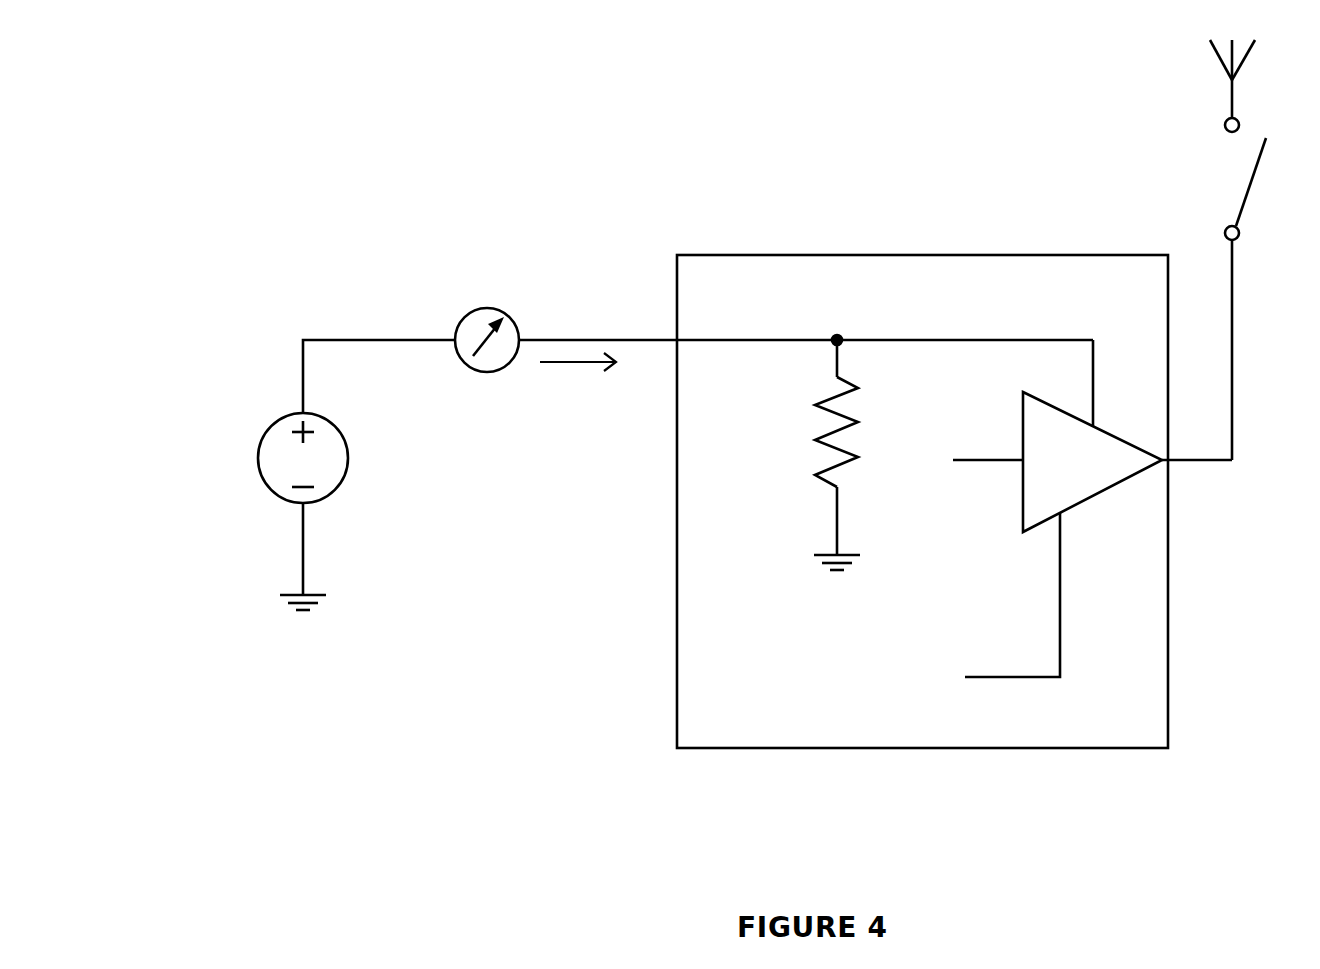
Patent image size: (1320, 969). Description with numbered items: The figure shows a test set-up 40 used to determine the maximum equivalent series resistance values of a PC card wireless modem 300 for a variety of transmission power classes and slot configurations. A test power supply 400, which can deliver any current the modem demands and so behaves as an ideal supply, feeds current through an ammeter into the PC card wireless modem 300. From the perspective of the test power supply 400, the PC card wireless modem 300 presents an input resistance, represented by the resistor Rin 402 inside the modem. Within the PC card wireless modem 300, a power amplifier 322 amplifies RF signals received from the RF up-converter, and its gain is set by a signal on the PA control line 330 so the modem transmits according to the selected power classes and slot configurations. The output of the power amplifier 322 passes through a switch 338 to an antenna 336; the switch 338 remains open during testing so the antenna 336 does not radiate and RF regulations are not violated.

The test set-up 40 is at (531, 753).
The test power supply 400 is at (253, 442).
The resistor Rin 402 is at (812, 414).
The PC card wireless modem 300 is at (1112, 755).
The power amplifier 322 is at (1017, 418).
The PA control line 330 is at (1070, 653).
The antenna 336 is at (1185, 73).
The switch 338 is at (1218, 167).